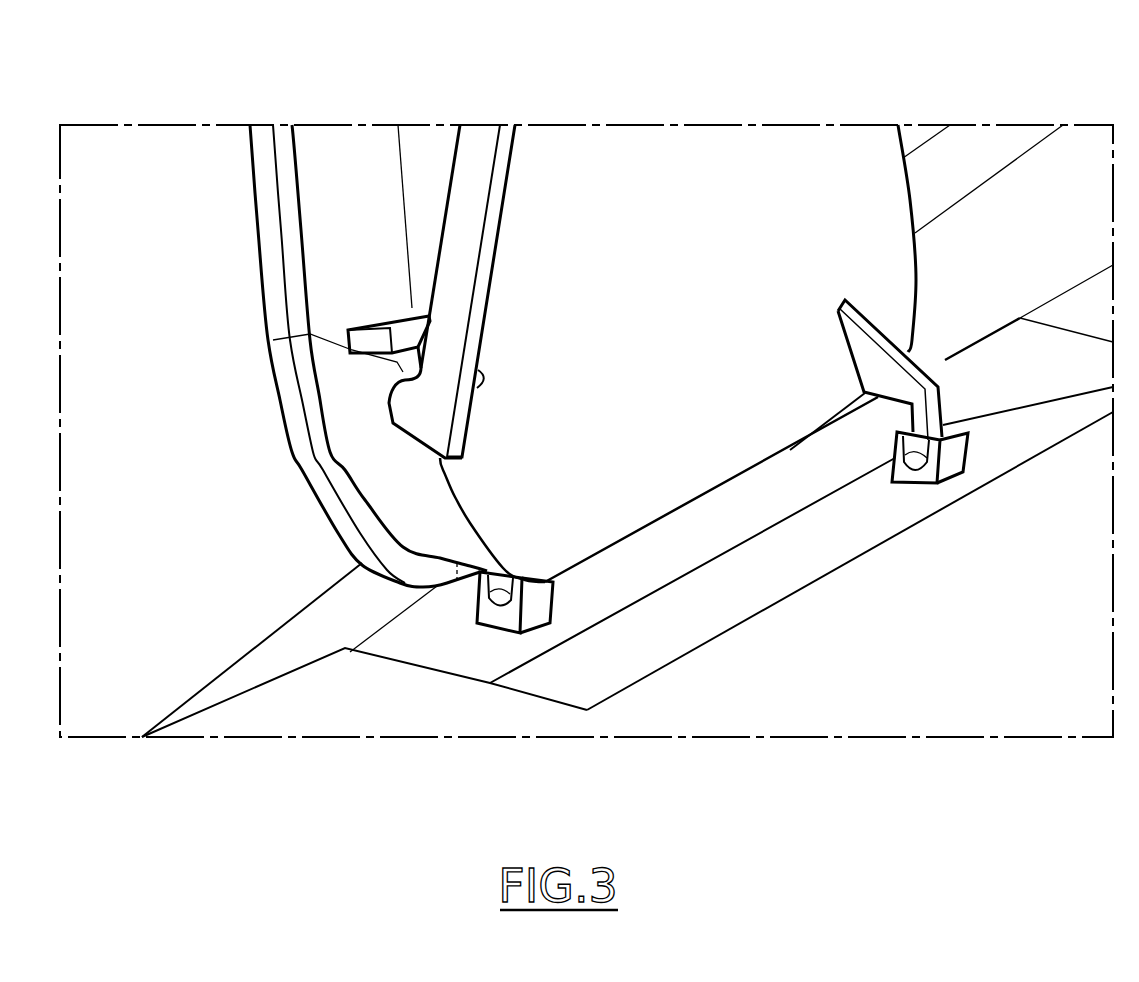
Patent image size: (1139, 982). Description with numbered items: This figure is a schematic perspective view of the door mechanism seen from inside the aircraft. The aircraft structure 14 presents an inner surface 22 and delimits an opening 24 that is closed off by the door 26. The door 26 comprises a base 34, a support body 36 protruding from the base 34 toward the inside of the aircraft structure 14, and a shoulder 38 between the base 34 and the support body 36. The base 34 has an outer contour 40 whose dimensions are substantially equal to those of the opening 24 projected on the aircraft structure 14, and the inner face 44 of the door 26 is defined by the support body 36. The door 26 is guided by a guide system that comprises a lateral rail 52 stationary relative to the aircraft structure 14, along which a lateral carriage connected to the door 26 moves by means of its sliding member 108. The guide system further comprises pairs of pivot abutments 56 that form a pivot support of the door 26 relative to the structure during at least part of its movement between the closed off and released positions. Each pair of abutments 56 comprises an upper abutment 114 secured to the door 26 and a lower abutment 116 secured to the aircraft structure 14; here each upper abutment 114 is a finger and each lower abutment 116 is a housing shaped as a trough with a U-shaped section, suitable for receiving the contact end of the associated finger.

The inner surface 22 is at (162, 148).
The aircraft structure 14 is at (306, 392).
The opening 24 is at (292, 452).
The base 34 is at (285, 380).
The outer contour 40 is at (318, 510).
The shoulder 38 is at (401, 560).
The support body 36 is at (730, 316).
The inner face 44 is at (748, 148).
The lateral rail 52 is at (487, 107).
The sliding member 108 is at (388, 403).
The door 26 is at (612, 562).
The pair of pivot abutments 56 is at (755, 501).
The upper abutment 114 is at (940, 410).
The lower abutment 116 is at (965, 457).